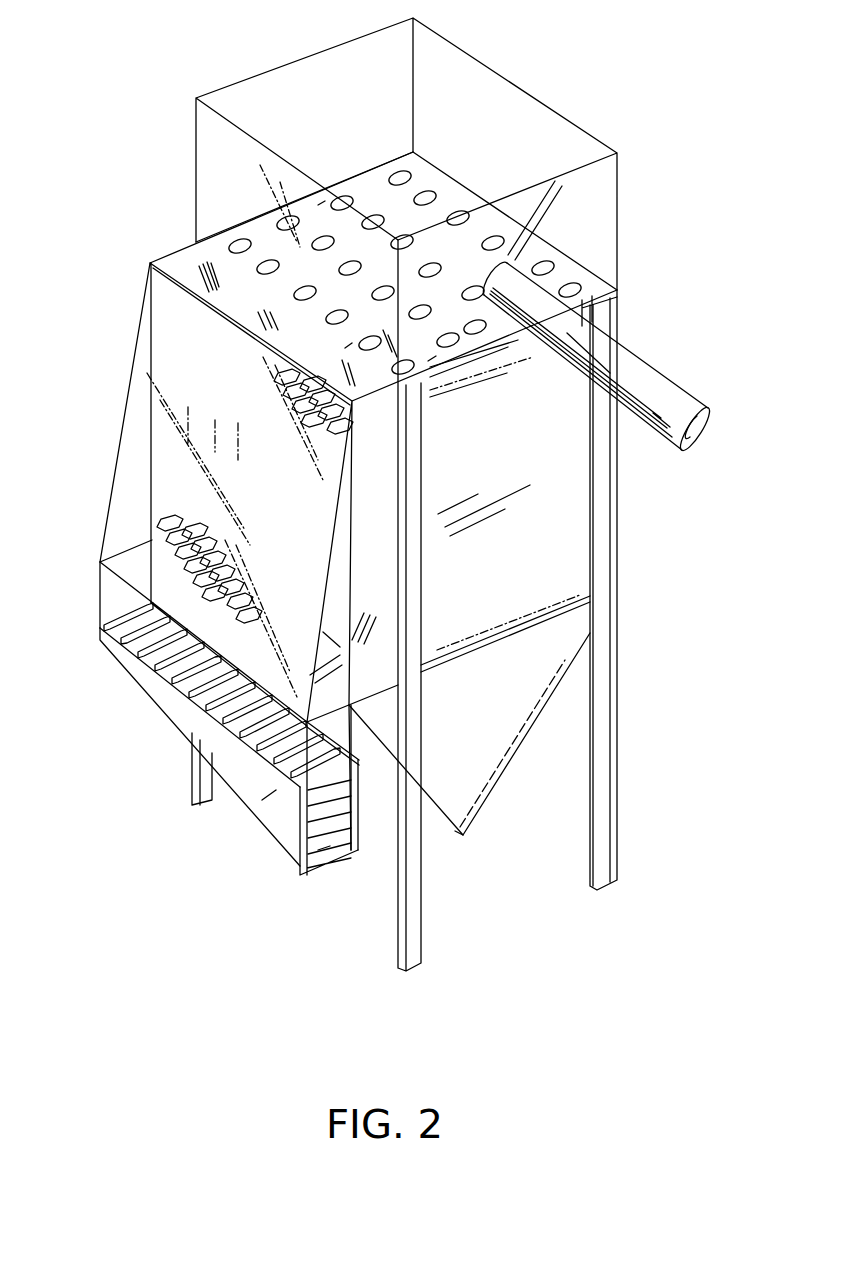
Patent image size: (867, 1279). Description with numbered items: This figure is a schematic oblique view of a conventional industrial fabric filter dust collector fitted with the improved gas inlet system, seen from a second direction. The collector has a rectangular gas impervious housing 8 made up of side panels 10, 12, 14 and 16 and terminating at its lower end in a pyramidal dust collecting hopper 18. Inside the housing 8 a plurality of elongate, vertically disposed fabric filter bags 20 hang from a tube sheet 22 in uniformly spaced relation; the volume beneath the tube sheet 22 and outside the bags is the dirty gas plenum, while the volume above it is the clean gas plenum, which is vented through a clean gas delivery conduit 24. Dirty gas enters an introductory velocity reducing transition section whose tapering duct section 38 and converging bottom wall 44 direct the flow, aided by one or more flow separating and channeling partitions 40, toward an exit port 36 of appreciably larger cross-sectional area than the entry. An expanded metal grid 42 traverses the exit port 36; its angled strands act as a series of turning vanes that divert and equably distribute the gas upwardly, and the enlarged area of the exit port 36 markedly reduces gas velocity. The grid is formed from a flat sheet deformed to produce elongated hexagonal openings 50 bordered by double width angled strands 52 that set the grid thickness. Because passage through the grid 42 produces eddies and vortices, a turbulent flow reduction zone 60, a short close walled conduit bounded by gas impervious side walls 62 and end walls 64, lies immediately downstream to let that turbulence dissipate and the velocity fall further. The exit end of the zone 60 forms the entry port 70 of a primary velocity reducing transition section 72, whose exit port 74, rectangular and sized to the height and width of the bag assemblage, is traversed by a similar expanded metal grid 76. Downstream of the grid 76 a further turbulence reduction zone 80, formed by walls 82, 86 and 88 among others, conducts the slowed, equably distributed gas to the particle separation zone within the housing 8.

The housing 8 is at (618, 526).
The side panel 10 is at (472, 192).
The side panel 12 is at (428, 362).
The side panel 14 is at (345, 349).
The side panel 16 is at (386, 168).
The dust collecting hopper 18 is at (507, 768).
The fabric filter bags 20 is at (289, 218).
The tube sheet 22 is at (318, 204).
The clean gas delivery conduit 24 is at (627, 361).
The exit port 36 is at (180, 694).
The tapering duct section 38 is at (193, 728).
The flow separating and channeling partitions 40 is at (277, 791).
The expanded metal grid 42 is at (128, 621).
The bottom wall 44 is at (137, 681).
The openings 50 is at (283, 847).
The double width angled strands 52 is at (323, 851).
The turbulent flow reduction zone 60 is at (347, 742).
The side walls 62 is at (112, 590).
The end walls 64 is at (122, 556).
The entry port 70 is at (241, 641).
The primary velocity reducing transition section 72 is at (125, 400).
The exit port 74 is at (345, 618).
The expanded metal grid 76 is at (304, 393).
The turbulence reduction zone 80 is at (185, 270).
The wall 82 is at (147, 318).
The wall 86 is at (425, 486).
The wall 88 is at (376, 676).